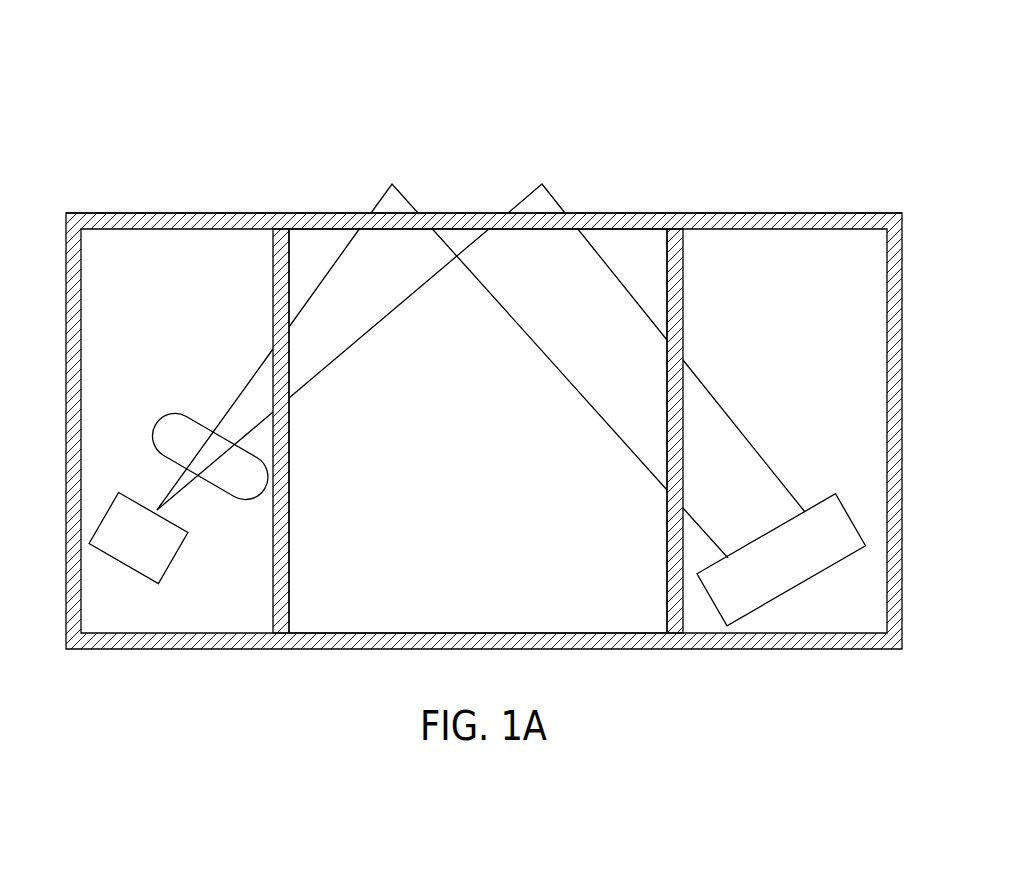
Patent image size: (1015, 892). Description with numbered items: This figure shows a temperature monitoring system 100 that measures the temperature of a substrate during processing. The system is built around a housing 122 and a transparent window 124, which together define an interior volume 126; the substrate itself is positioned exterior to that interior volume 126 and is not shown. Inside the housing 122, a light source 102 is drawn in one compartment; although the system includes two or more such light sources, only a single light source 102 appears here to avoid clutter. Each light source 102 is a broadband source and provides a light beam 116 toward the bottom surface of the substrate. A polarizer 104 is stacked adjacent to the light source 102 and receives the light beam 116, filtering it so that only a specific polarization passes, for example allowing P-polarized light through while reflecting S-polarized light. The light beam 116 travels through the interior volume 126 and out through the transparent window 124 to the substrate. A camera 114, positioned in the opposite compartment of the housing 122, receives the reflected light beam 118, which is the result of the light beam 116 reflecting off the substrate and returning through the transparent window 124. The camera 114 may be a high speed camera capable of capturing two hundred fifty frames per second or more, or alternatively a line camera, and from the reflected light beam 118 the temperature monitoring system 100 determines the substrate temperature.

The temperature monitoring system 100 is at (185, 122).
The light source 102 is at (173, 558).
The polarizer 104 is at (163, 413).
The camera 114 is at (857, 530).
The light beam 116 is at (252, 378).
The reflected light beam 118 is at (722, 400).
The housing 122 is at (902, 349).
The transparent window 124 is at (637, 213).
The interior volume 126 is at (498, 434).